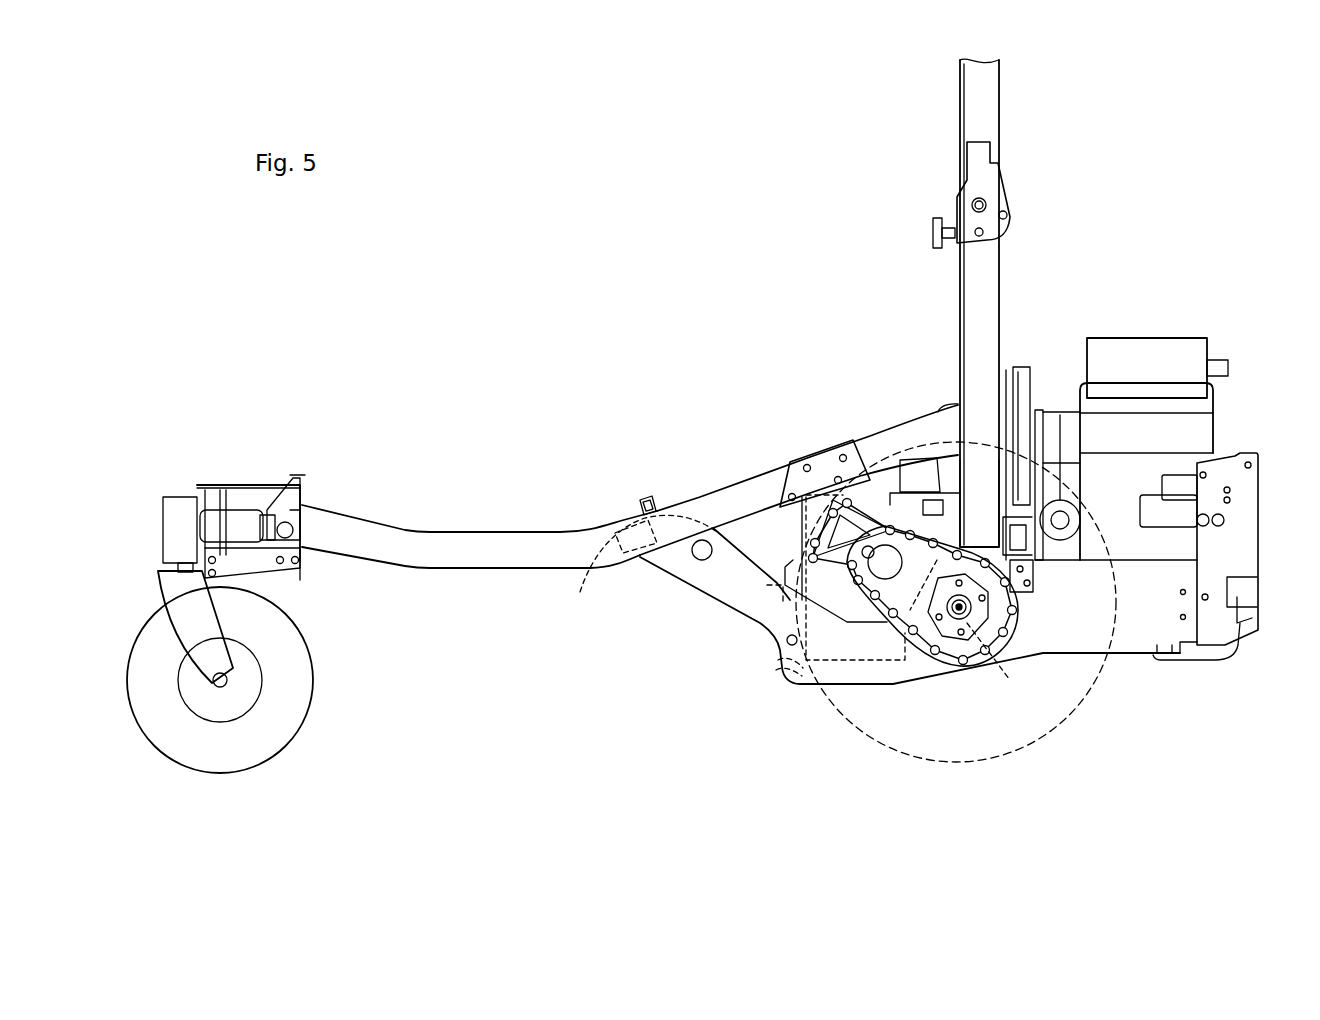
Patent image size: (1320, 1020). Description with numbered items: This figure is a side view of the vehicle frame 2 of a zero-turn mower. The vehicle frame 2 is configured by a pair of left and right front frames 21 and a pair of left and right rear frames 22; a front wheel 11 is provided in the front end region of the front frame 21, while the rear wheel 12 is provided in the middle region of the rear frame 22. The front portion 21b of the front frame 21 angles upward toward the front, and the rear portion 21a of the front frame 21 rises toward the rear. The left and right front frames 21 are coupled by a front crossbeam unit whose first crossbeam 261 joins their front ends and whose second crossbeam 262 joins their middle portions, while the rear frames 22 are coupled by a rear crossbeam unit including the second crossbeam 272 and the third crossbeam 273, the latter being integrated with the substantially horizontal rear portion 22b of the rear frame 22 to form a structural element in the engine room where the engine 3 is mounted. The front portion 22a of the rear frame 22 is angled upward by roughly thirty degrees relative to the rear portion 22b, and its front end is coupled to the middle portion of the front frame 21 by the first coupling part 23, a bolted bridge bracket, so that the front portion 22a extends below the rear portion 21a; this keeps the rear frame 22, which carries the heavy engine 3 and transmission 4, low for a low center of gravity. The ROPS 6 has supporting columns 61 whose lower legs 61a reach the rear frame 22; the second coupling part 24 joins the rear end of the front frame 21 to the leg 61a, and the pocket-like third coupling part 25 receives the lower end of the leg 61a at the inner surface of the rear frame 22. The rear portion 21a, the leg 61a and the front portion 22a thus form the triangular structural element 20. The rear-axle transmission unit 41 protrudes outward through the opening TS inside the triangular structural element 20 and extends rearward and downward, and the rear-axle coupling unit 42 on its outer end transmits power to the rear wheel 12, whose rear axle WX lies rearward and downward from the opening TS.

The vehicle frame 2 is at (238, 478).
The engine 3 is at (1208, 435).
The transmission 4 is at (850, 663).
The ROPS 6 is at (1000, 110).
The front wheels 11 is at (262, 750).
The rear wheels 12 is at (1018, 752).
The triangular structural element 20 is at (745, 622).
The front frame 21 is at (470, 571).
The rear portion of the front frame 21a is at (737, 495).
The front portion of the front frame 21b is at (367, 527).
The rear frame 22 is at (1066, 655).
The front portion of the rear frame 22a is at (803, 692).
The rear portion of the rear frame 22b is at (1137, 642).
The first coupling part 23 is at (615, 540).
The second coupling part 24 is at (823, 452).
The third coupling part 25 is at (1035, 573).
The first crossbeam 261 is at (302, 548).
The second crossbeam 262 is at (648, 494).
The second crossbeam 272 is at (770, 693).
The third crossbeam 273 is at (1168, 657).
The rear-axle transmission unit 41 is at (862, 495).
The rear-axle coupling unit 42 is at (952, 645).
The supporting column 61 is at (990, 273).
The leg 61a is at (978, 424).
The opening TS is at (775, 548).
The rear axle WX is at (1008, 689).